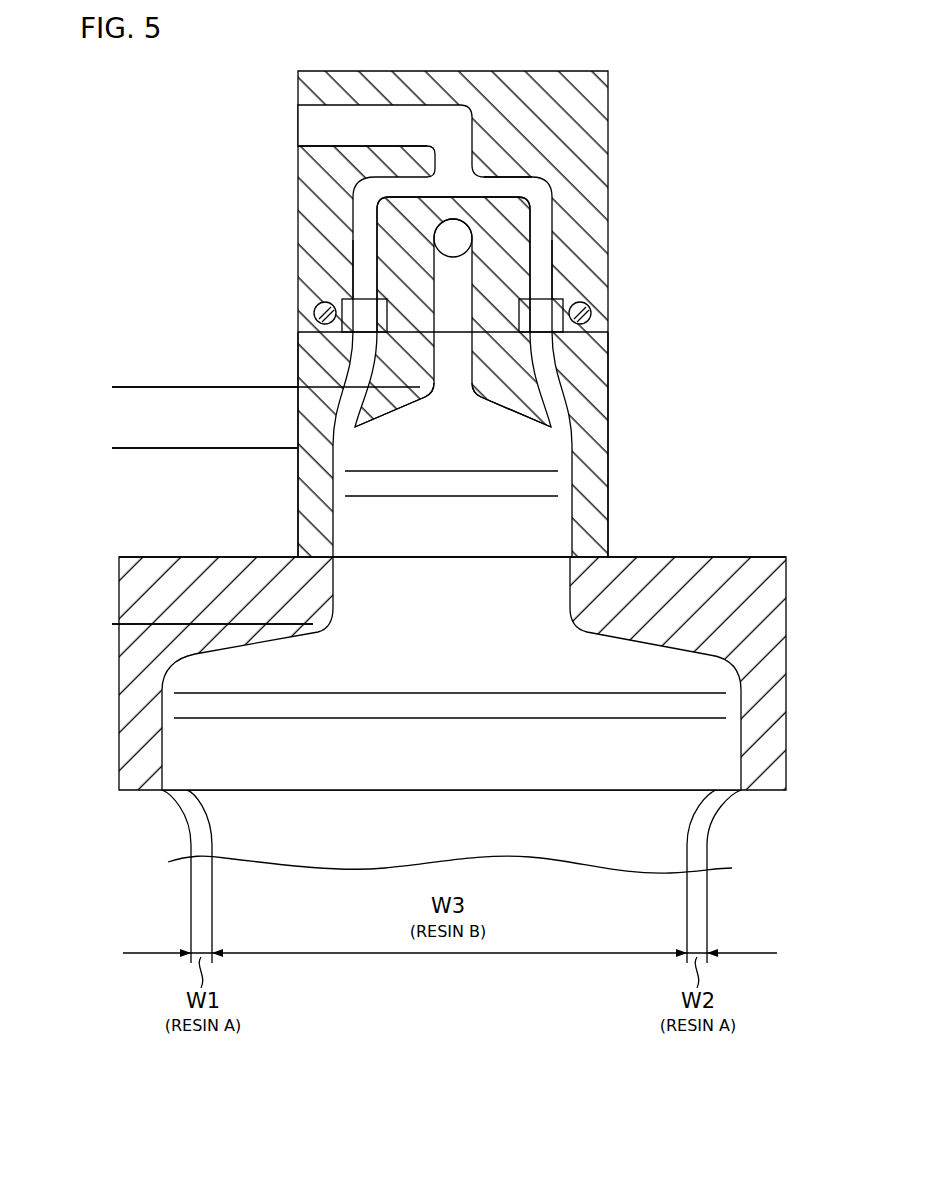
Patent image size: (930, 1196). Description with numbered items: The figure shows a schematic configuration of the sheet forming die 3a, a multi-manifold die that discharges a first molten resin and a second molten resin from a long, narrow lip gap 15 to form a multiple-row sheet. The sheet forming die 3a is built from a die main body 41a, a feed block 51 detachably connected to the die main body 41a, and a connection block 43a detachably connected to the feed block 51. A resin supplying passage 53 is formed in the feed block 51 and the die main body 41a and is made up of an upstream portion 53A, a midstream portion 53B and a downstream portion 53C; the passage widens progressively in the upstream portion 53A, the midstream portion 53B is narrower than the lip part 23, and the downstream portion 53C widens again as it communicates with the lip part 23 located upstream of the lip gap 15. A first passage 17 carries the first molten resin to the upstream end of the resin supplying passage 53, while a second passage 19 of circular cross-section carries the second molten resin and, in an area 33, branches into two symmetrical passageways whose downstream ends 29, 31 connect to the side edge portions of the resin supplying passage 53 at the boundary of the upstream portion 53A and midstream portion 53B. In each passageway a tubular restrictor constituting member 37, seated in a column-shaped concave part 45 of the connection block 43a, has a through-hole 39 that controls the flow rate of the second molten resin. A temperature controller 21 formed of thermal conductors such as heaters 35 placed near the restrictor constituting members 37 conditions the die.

The sheet forming die 3a is at (724, 198).
The lip gap 15 is at (611, 794).
The first passage 17 is at (462, 268).
The second passage 19 is at (405, 118).
The temperature controller 21 is at (256, 206).
The lip part 23 is at (165, 696).
The downstream end of passageway 29 is at (343, 425).
The downstream end of passageway 31 is at (564, 412).
The branching area 33 is at (452, 186).
The heater 35 is at (314, 312).
The restrictor constituting member 37 is at (344, 299).
The through-hole 39 is at (355, 292).
The die main body 41a is at (735, 557).
The connection block 43a is at (608, 112).
The column-shaped concave part 45 is at (560, 342).
The feed block 51 is at (608, 450).
The resin supplying passage 53 is at (48, 387).
The upstream portion 53A is at (108, 387).
The midstream portion 53B is at (108, 448).
The downstream portion 53C is at (108, 624).